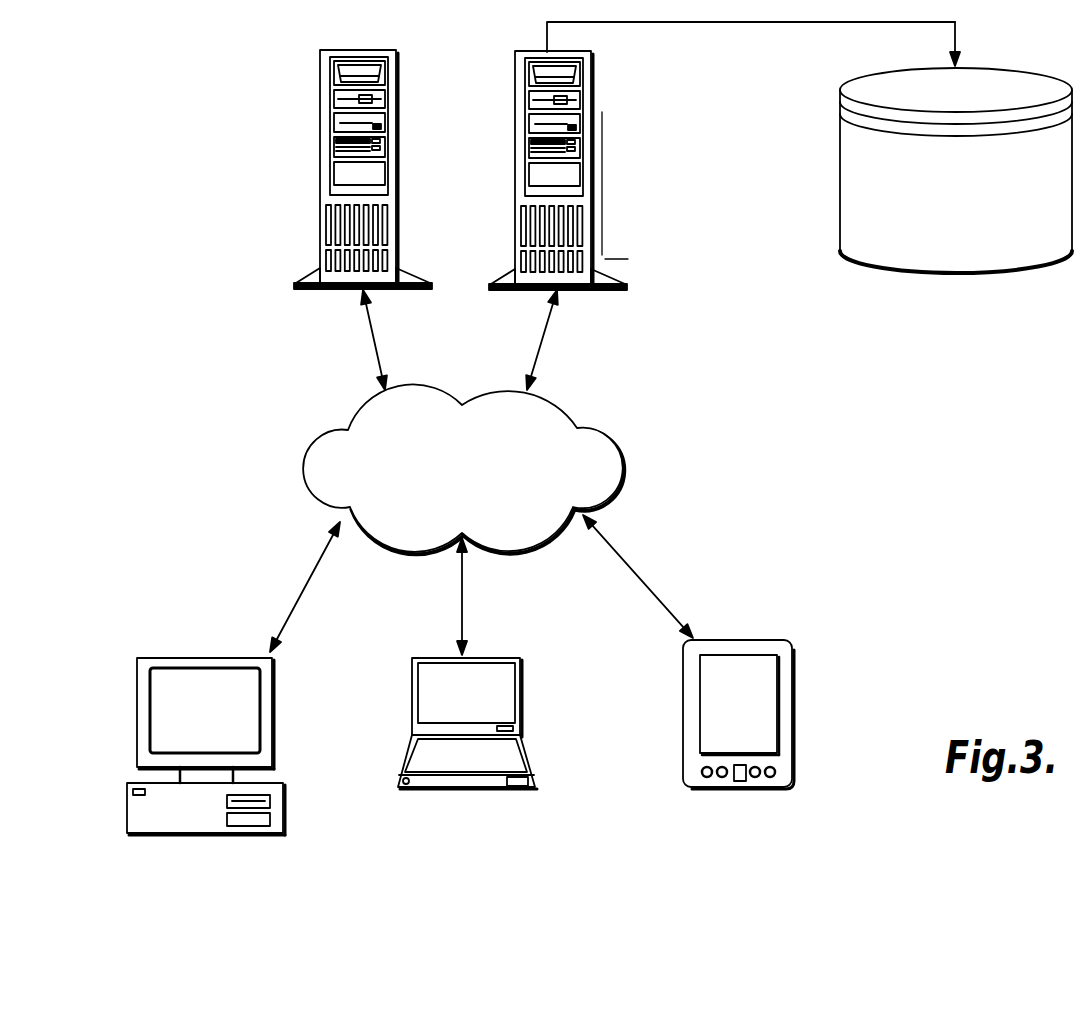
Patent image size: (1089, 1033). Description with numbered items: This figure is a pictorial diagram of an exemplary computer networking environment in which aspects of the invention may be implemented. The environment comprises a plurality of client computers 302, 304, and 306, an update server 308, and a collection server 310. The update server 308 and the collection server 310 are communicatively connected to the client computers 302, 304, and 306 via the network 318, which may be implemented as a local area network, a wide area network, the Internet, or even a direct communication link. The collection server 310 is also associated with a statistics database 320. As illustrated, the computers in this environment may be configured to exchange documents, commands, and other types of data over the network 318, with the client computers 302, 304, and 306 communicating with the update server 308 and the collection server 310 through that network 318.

The client computer 302 is at (204, 657).
The client computer 304 is at (512, 657).
The client computer 306 is at (785, 638).
The update server 308 is at (320, 232).
The collection server 310 is at (593, 292).
The network 318 is at (303, 470).
The statistics database 320 is at (955, 279).